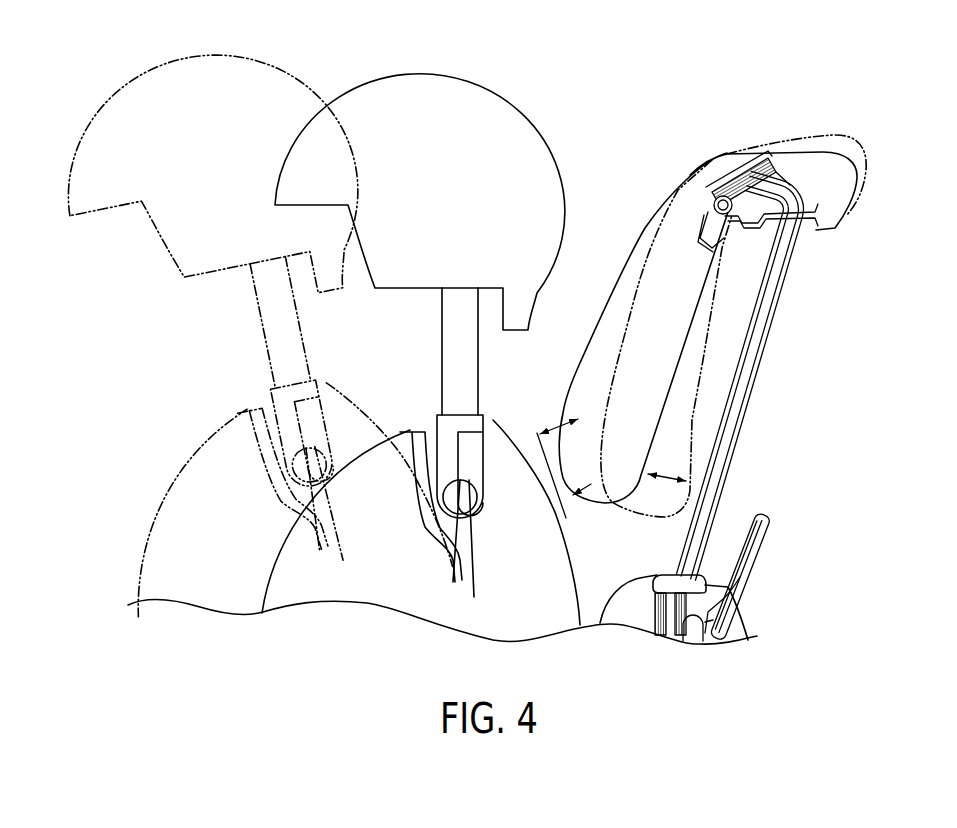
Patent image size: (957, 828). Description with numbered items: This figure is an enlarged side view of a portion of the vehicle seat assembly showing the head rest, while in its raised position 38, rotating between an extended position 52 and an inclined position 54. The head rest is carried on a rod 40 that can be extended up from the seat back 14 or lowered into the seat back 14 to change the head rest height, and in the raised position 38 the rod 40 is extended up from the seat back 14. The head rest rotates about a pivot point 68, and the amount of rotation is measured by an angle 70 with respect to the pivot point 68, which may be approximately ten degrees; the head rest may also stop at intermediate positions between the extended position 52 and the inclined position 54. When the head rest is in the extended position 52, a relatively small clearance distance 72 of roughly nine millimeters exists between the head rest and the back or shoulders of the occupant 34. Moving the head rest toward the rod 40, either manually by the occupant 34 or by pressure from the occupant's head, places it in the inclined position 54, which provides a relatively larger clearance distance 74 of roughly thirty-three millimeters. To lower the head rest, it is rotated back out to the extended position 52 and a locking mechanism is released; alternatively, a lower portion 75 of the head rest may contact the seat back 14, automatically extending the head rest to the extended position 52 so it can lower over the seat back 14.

The seat back 14 is at (708, 610).
The occupant 34 is at (292, 152).
The raised position 38 is at (868, 145).
The rod 40 is at (766, 322).
The extended position 52 is at (648, 236).
The inclined position 54 is at (646, 268).
The pivot point 68 is at (714, 200).
The angle 70 is at (668, 477).
The clearance distance 72 is at (550, 504).
The clearance distance 74 is at (558, 432).
The lower portion 75 is at (598, 501).